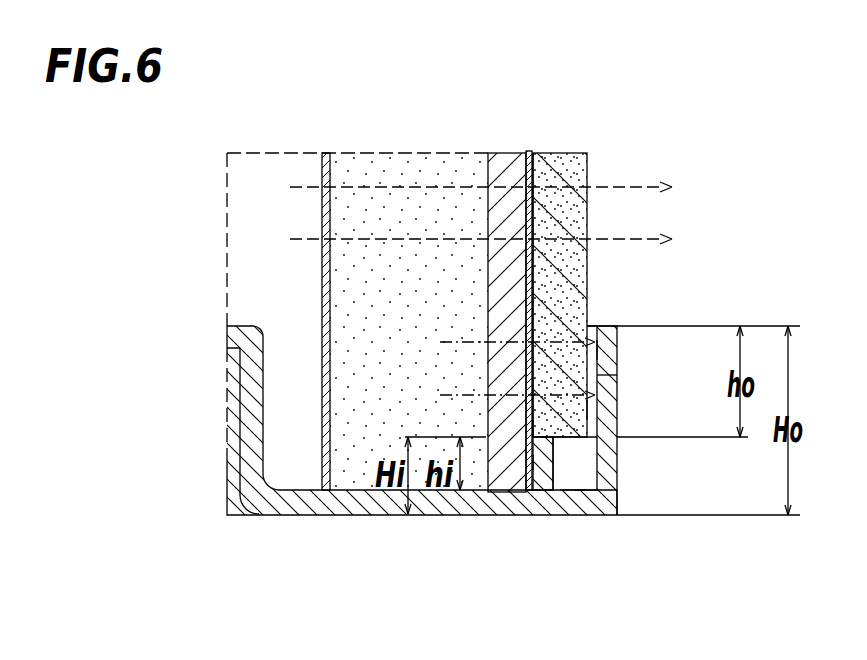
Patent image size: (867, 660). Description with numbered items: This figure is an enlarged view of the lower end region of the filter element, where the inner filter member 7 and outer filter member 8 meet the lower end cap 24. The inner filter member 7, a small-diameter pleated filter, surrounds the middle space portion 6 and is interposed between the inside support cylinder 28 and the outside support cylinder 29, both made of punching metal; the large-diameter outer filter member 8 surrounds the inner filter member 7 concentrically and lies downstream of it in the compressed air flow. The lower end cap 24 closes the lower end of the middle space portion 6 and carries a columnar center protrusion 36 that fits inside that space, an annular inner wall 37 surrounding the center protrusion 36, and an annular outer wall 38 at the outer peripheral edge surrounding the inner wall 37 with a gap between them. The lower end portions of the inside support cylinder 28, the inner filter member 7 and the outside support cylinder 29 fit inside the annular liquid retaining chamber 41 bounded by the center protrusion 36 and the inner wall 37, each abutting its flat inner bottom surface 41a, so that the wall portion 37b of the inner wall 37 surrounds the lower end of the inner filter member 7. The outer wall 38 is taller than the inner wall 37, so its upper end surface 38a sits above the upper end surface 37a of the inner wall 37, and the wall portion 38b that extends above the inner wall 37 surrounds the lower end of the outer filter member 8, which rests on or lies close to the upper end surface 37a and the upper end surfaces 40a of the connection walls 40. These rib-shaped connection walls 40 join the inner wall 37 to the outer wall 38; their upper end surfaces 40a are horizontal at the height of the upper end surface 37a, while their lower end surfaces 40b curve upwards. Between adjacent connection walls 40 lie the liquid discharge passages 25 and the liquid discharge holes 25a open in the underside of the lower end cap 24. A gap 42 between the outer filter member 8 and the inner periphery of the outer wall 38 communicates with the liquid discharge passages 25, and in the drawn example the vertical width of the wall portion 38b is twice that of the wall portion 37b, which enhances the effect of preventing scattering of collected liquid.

The middle space portion 6 is at (258, 247).
The inner filter member 7 is at (508, 163).
The outer filter member 8 is at (577, 167).
The lower end cap 24 is at (270, 516).
The liquid discharge passage 25 is at (592, 468).
The liquid discharge hole 25a is at (583, 518).
The inside support cylinder 28 is at (325, 177).
The outside support cylinder 29 is at (529, 163).
The center protrusion 36 is at (250, 408).
The inner wall 37 is at (560, 498).
The upper end surface of the inner wall 37a is at (533, 427).
The wall portion of the inner wall 37b is at (545, 458).
The outer wall 38 is at (578, 482).
The upper end surface of the outer wall 38a is at (592, 353).
The wall portion of the outer wall 38b is at (603, 380).
The connection wall 40 is at (620, 516).
The upper end surface of the connection wall 40a is at (592, 412).
The lower end surface of the connection wall 40b is at (572, 517).
The liquid retaining chamber 41 is at (346, 505).
The inner bottom surface 41a is at (275, 486).
The gap 42 is at (617, 345).